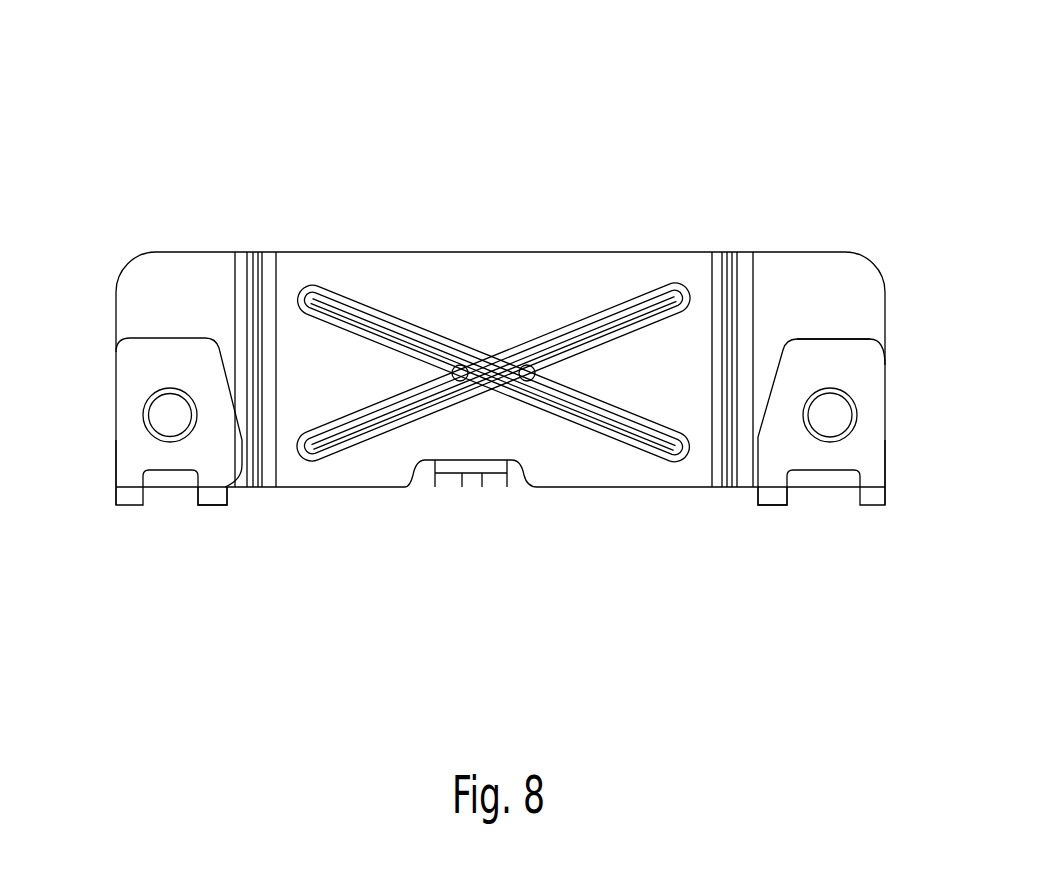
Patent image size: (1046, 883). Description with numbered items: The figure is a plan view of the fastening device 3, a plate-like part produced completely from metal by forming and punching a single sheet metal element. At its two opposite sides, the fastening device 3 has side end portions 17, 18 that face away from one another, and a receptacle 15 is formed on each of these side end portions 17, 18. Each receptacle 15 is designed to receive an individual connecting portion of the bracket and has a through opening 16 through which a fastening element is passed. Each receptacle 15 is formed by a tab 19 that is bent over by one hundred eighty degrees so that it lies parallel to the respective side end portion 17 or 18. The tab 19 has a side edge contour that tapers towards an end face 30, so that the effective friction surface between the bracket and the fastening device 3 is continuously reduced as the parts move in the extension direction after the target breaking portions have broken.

The fastening device 3 is at (572, 95).
The receptacle 15 is at (97, 455).
The through opening 16 is at (170, 413).
The side end portion 17 is at (209, 552).
The side end portion 18 is at (746, 550).
The tab 19 is at (128, 380).
The end face 30 is at (845, 322).